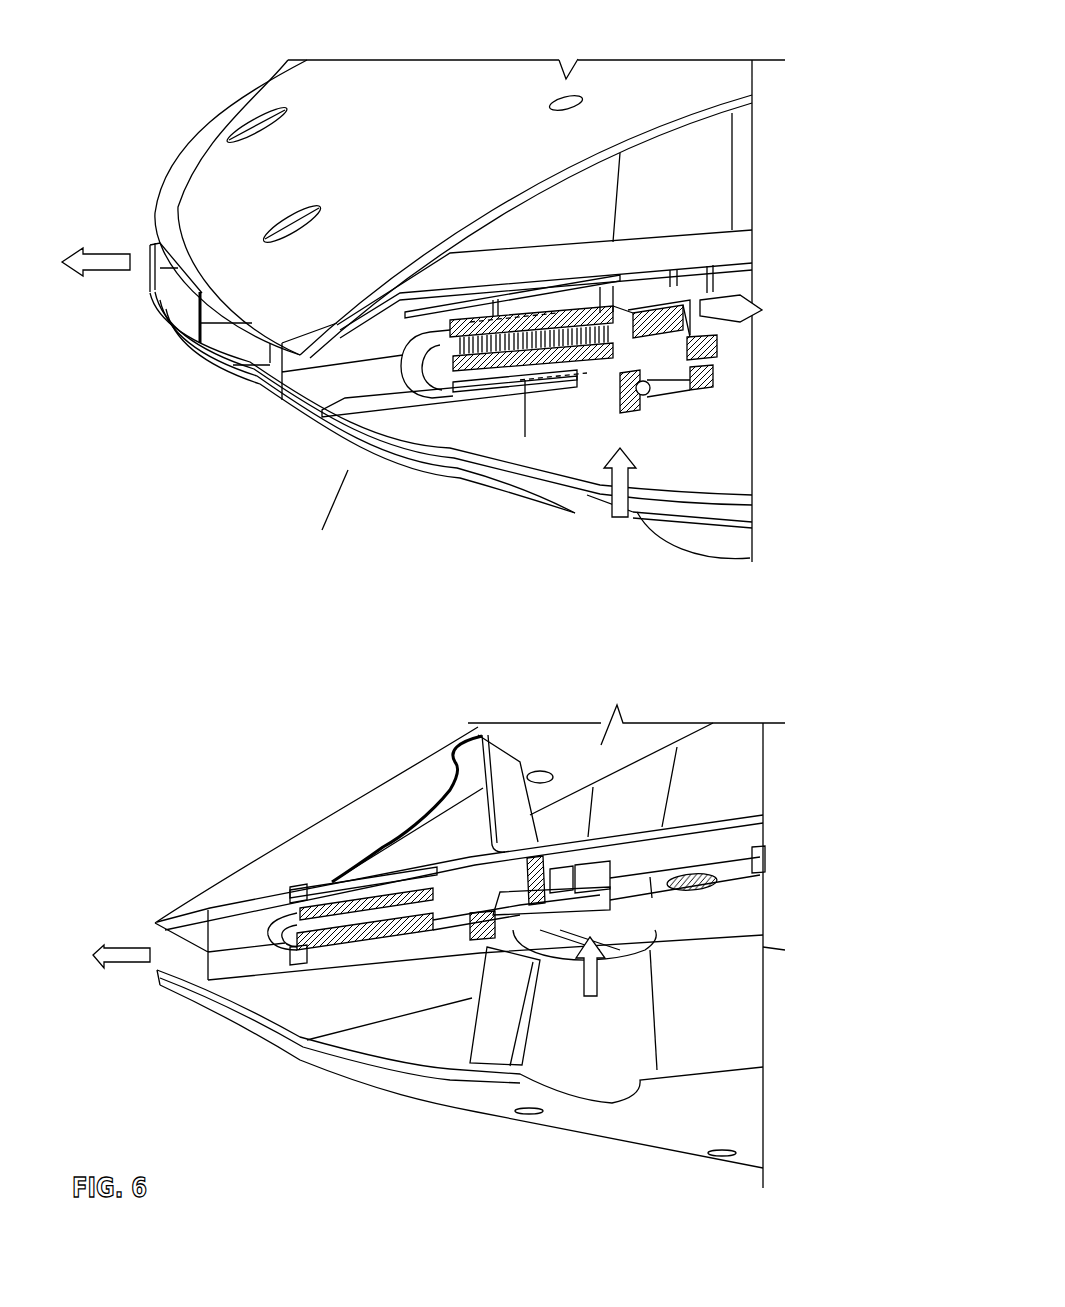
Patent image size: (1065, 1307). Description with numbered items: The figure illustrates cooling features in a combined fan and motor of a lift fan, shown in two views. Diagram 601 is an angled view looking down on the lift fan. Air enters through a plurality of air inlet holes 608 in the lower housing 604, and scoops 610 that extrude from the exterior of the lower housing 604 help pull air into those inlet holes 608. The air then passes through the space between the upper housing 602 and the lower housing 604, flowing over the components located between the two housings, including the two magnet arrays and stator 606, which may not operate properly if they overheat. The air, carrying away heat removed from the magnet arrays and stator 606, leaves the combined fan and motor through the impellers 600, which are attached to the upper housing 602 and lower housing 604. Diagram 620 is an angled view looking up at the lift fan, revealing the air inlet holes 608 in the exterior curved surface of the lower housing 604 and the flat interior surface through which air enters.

The impellers 600 is at (303, 383).
The diagram showing an angled view looking down on the lift fan 601 is at (780, 41).
The upper housing 602 is at (496, 74).
The lower housing 604 is at (297, 1050).
The two magnet arrays and stator 606 is at (512, 390).
The air inlet holes 608 is at (597, 521).
The scoops 610 is at (690, 550).
The diagram showing an angled view looking up at the lift fan 620 is at (746, 687).